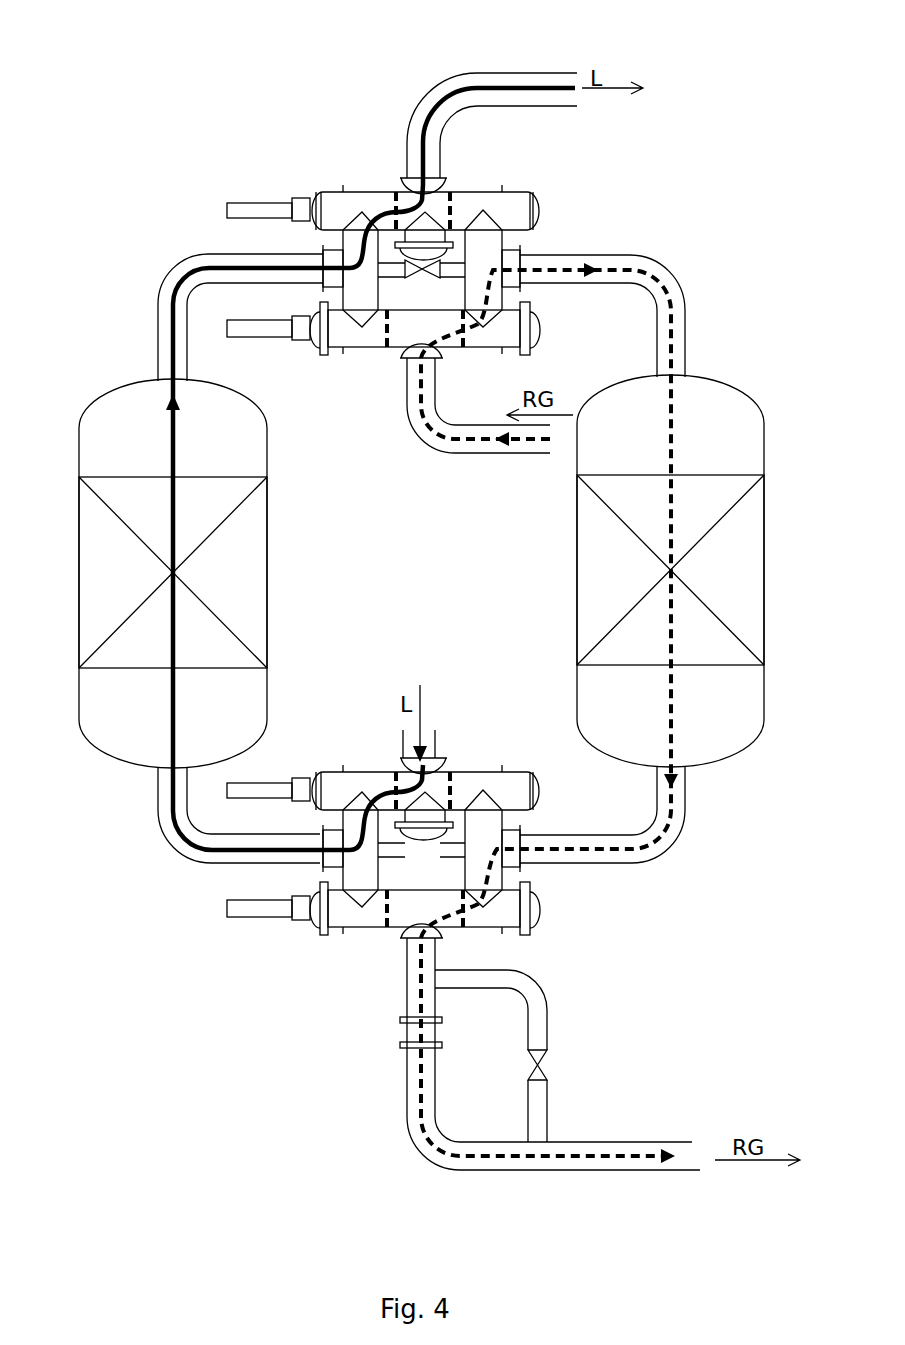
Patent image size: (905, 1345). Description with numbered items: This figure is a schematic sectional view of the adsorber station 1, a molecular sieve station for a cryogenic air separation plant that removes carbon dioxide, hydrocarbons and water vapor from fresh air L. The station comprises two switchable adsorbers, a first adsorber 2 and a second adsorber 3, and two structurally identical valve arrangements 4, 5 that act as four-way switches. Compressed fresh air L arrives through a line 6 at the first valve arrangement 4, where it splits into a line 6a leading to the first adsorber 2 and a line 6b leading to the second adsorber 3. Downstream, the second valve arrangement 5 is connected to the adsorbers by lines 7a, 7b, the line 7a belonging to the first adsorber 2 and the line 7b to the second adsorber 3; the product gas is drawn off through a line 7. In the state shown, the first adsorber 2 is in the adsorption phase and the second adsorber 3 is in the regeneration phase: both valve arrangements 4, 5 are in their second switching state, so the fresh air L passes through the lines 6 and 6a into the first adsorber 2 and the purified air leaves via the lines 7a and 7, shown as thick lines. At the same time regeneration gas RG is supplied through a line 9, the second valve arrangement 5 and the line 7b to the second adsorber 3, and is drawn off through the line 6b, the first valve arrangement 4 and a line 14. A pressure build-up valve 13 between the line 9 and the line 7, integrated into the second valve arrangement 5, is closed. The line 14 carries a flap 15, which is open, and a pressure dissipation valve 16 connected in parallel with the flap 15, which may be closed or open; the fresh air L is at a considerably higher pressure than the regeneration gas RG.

The adsorber station 1 is at (367, 64).
The first adsorber 2 is at (79, 575).
The second adsorber 3 is at (764, 540).
The first valve arrangement 4 is at (383, 900).
The second valve arrangement 5 is at (383, 286).
The line 6 is at (438, 748).
The line 6a is at (172, 832).
The line 6b is at (688, 858).
The line 7 is at (505, 73).
The line 7a is at (188, 262).
The line 7b is at (655, 256).
The line 9 is at (430, 446).
The pressure build-up valve 13 is at (415, 268).
The line 14 is at (645, 1172).
The flap 15 is at (408, 1035).
The pressure dissipation valve 16 is at (543, 1060).